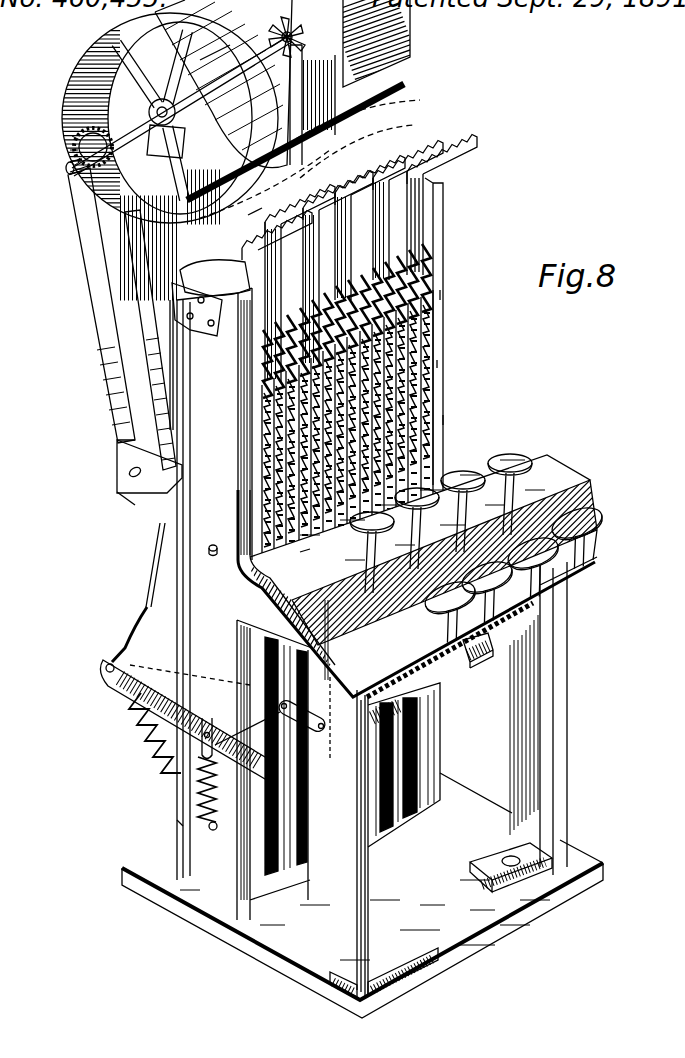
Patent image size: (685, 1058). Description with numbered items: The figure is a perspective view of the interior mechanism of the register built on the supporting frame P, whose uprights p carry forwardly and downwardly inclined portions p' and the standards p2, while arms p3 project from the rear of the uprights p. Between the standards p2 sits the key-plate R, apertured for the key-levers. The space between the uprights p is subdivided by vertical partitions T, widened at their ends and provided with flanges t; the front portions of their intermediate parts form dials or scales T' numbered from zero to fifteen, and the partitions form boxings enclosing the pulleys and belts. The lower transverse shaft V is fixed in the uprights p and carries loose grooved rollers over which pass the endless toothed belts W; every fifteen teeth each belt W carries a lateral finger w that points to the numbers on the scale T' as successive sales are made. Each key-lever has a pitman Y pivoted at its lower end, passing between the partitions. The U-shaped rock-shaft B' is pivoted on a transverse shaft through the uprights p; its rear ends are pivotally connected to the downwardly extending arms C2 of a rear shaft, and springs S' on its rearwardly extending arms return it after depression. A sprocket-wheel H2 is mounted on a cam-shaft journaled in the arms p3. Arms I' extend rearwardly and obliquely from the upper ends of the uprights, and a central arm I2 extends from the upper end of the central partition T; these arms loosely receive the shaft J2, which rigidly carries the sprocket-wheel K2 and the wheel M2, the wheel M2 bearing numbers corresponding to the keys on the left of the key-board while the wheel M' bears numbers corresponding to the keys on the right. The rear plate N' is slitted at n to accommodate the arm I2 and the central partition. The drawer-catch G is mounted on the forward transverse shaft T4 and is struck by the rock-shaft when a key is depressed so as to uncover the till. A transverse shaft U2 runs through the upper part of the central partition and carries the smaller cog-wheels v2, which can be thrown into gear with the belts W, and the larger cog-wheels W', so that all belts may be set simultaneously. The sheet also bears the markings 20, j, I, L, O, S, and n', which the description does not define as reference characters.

The transverse shaft J2 is at (66, 150).
The sprocket-wheel K2 is at (140, 130).
The wheel M2 is at (245, 50).
The indicator numeral 20 is at (217, 45).
The ratchet j is at (300, 40).
The wheel M' is at (400, 43).
The rear plate N' is at (320, 151).
The vertical partitions T is at (336, 500).
The flanges t is at (323, 262).
The cog-wheel v2 is at (428, 174).
The slit n is at (255, 204).
The frame I is at (344, 328).
The central arm I2 is at (309, 110).
The uprights p is at (328, 544).
The endless toothed belts W is at (458, 292).
The lateral fingers w is at (430, 367).
The dials or scales T' is at (464, 415).
The transverse shaft U2 is at (212, 312).
The cog-wheels W' is at (193, 309).
The connecting bar L is at (97, 325).
The arms I' is at (66, 216).
The sprocket-wheel H2 is at (115, 448).
The arms p3 is at (133, 490).
The supporting frame P is at (122, 433).
The key-plate R is at (542, 485).
The key board plate O is at (308, 553).
The keys S is at (483, 535).
The drawer-catch G is at (485, 670).
The standards p2 is at (553, 730).
The inclined portions p' is at (317, 686).
The transverse forward shaft T4 is at (314, 638).
The U-shaped rock-shaft B' is at (187, 767).
The downwardly-extending arms C2 is at (132, 621).
The rod n' is at (140, 565).
The lower transverse shaft V is at (213, 557).
The springs S' is at (155, 761).
The pitman Y is at (290, 742).